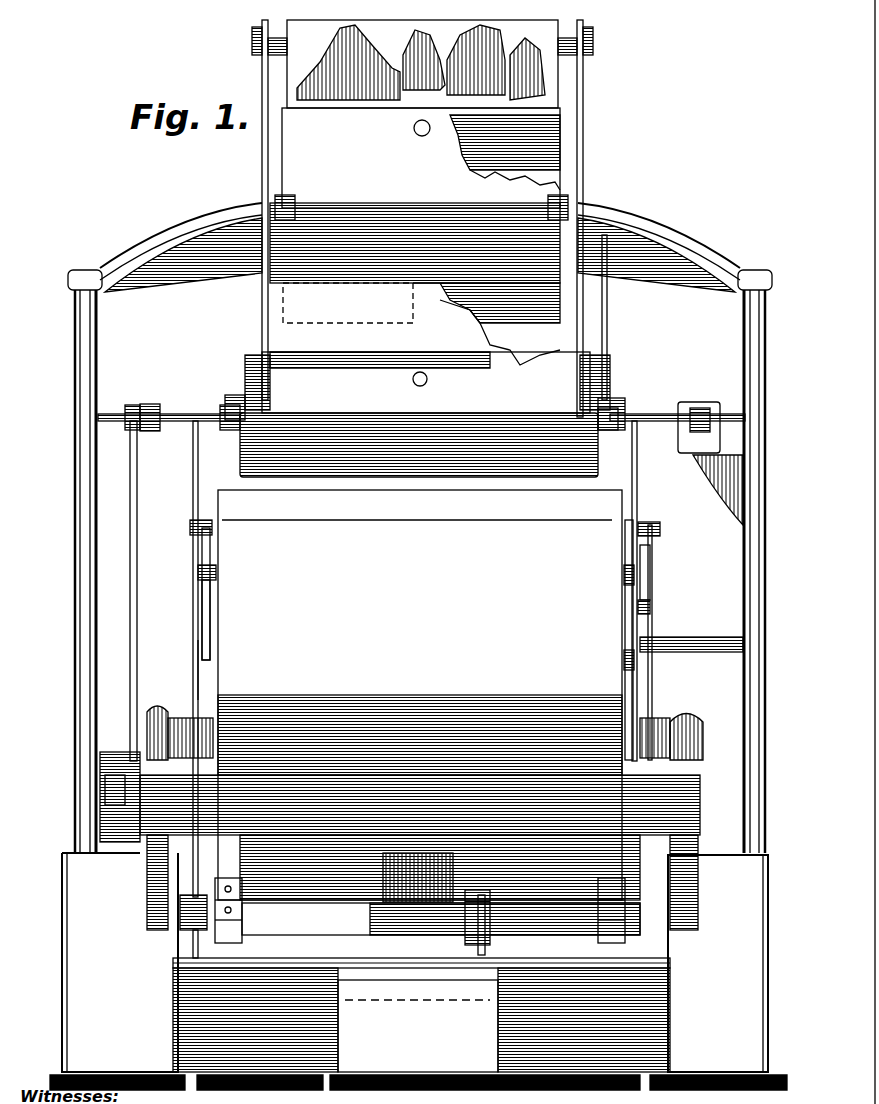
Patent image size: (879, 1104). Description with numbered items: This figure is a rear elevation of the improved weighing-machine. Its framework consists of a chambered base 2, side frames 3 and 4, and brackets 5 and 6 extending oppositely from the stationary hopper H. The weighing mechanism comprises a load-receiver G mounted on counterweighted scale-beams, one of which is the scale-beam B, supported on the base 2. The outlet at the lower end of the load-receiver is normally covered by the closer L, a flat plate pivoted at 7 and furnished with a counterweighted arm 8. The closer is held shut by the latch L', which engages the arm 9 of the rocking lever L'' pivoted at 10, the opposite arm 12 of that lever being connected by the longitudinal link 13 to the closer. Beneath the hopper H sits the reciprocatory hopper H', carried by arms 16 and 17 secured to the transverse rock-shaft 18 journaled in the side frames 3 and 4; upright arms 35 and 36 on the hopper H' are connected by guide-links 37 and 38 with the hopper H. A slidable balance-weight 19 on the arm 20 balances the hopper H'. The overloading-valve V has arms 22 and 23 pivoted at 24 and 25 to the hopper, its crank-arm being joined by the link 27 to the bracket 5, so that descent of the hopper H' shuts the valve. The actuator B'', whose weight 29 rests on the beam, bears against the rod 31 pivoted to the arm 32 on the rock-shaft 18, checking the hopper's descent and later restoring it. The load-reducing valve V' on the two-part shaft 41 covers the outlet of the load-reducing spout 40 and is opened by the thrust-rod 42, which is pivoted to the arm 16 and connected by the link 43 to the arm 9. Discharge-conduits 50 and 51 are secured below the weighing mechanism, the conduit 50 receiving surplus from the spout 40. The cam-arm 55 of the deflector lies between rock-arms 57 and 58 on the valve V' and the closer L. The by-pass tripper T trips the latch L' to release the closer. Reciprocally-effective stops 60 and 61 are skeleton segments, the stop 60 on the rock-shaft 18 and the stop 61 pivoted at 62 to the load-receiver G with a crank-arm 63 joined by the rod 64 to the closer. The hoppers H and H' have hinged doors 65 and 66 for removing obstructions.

The chambered base 2 is at (765, 965).
The side frame 3 is at (765, 545).
The side frame 4 is at (75, 528).
The bracket 5 is at (660, 230).
The bracket 6 is at (190, 230).
The pivot 7 is at (193, 945).
The counterweighted arm 8 is at (190, 930).
The arm 9 is at (625, 620).
The pivot 10 is at (650, 575).
The arm 12 is at (652, 545).
The longitudinal link 13 is at (652, 687).
The arm 16 is at (610, 432).
The arm 17 is at (228, 432).
The transverse rock-shaft 18 is at (178, 422).
The slidable balance-weight 19 is at (693, 458).
The arm 20 is at (702, 410).
The valve-arm 22 is at (610, 385).
The valve-arm 23 is at (245, 382).
The pivot 24 is at (607, 357).
The pivot 25 is at (250, 360).
The link 27 is at (607, 283).
The weight 29 is at (105, 810).
The link or rod 31 is at (137, 625).
The arm 32 is at (143, 405).
The upright arm 35 is at (583, 160).
The upright arm 36 is at (262, 155).
The guide-link 37 is at (593, 38).
The guide-link 38 is at (252, 38).
The load-reducing spout 40 is at (386, 862).
The two-part shaft 41 is at (245, 893).
The thrust-rod 42 is at (637, 497).
The link 43 is at (650, 608).
The discharge-conduit 50 is at (418, 1026).
The discharge-conduit 51 is at (473, 1020).
The cam-arm 55 is at (485, 935).
The rock-arm 57 is at (505, 900).
The rock-arm 58 is at (490, 920).
The stop 60 is at (203, 478).
The stop 61 is at (210, 618).
The pivot 62 is at (198, 571).
The crank-arm 63 is at (212, 545).
The rod 64 is at (193, 660).
The door 65 is at (421, 164).
The door 66 is at (426, 382).
The scale-beam B is at (421, 822).
The actuator B'' is at (87, 790).
The load-receiver G is at (429, 695).
The stationary hopper H is at (422, 64).
The reciprocatory hopper H' is at (415, 284).
The closer L is at (421, 1011).
The latch L' is at (615, 663).
The rocking lever L'' is at (614, 583).
The by-pass tripper T is at (650, 637).
The overloading-valve V is at (419, 463).
The load-reducing valve V' is at (441, 919).